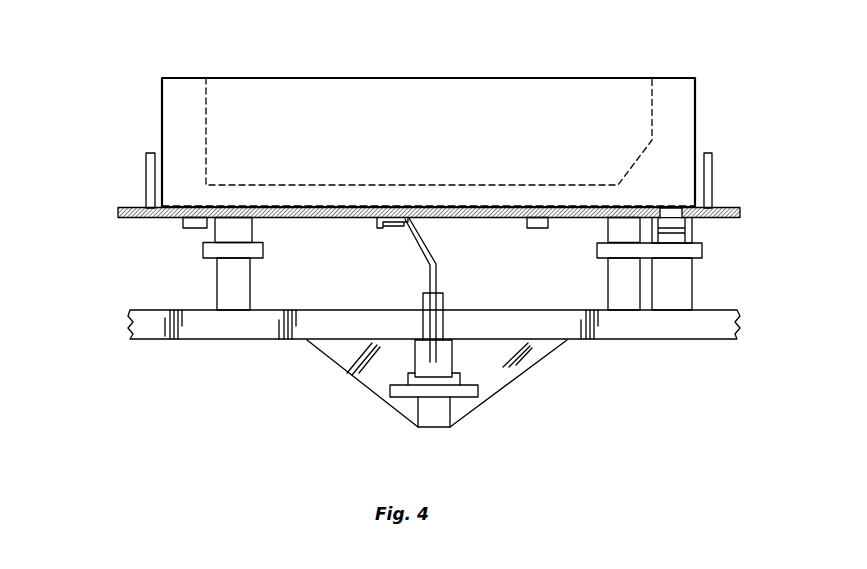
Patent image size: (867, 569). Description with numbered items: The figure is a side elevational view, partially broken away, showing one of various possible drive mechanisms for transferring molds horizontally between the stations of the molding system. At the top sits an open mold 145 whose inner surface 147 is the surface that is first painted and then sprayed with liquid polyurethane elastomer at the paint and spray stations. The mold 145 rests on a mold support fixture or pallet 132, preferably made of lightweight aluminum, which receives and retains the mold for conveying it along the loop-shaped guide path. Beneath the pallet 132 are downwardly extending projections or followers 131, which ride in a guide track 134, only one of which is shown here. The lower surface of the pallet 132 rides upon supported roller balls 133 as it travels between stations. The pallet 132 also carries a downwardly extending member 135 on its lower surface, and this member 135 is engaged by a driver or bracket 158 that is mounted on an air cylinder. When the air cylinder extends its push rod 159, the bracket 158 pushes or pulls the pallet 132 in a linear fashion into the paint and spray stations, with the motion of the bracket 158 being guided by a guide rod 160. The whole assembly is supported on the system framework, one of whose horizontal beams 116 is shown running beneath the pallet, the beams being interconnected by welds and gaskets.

The horizontal beam 116 is at (708, 340).
The followers 131 is at (196, 229).
The pallet 132 is at (136, 218).
The roller balls 133 is at (240, 218).
The guide track 134 is at (690, 230).
The downwardly extending member 135 is at (392, 228).
The open mold 145 is at (162, 125).
The inner surface 147 is at (440, 185).
The bracket 158 is at (437, 268).
The push rod 159 is at (455, 355).
The guide rod 160 is at (476, 391).